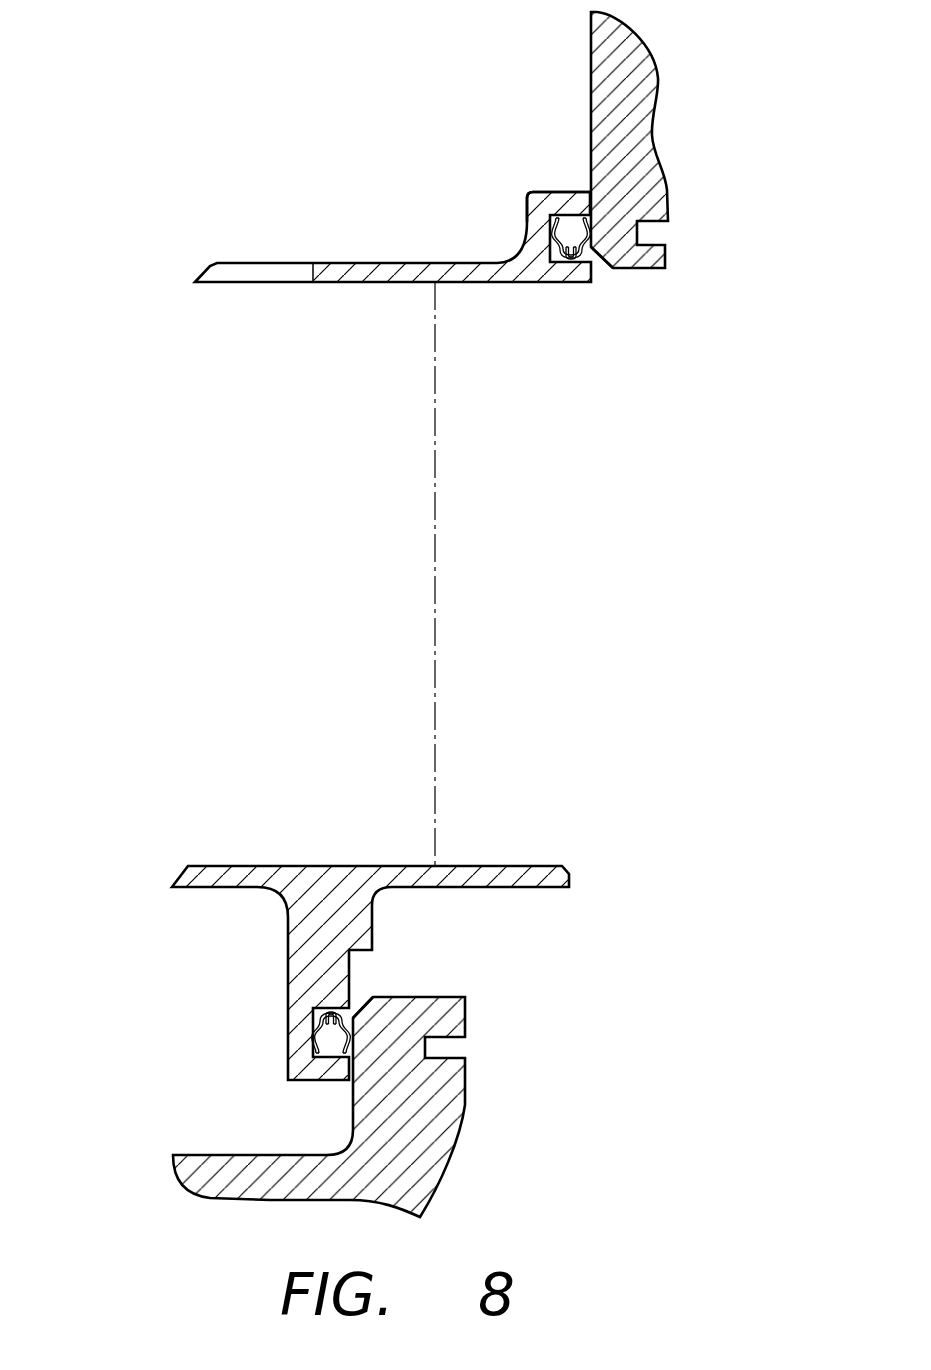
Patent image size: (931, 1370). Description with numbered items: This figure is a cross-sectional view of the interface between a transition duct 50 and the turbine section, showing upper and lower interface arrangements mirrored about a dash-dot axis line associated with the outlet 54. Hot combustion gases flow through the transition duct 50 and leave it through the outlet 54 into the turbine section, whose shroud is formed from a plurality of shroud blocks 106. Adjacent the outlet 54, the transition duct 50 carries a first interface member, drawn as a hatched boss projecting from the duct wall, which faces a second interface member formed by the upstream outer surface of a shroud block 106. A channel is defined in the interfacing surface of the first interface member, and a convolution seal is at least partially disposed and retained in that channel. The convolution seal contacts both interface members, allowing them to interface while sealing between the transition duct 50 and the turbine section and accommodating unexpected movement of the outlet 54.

The transition duct 50 is at (192, 267).
The outlet 54 is at (628, 497).
The shroud block 106 is at (634, 140).